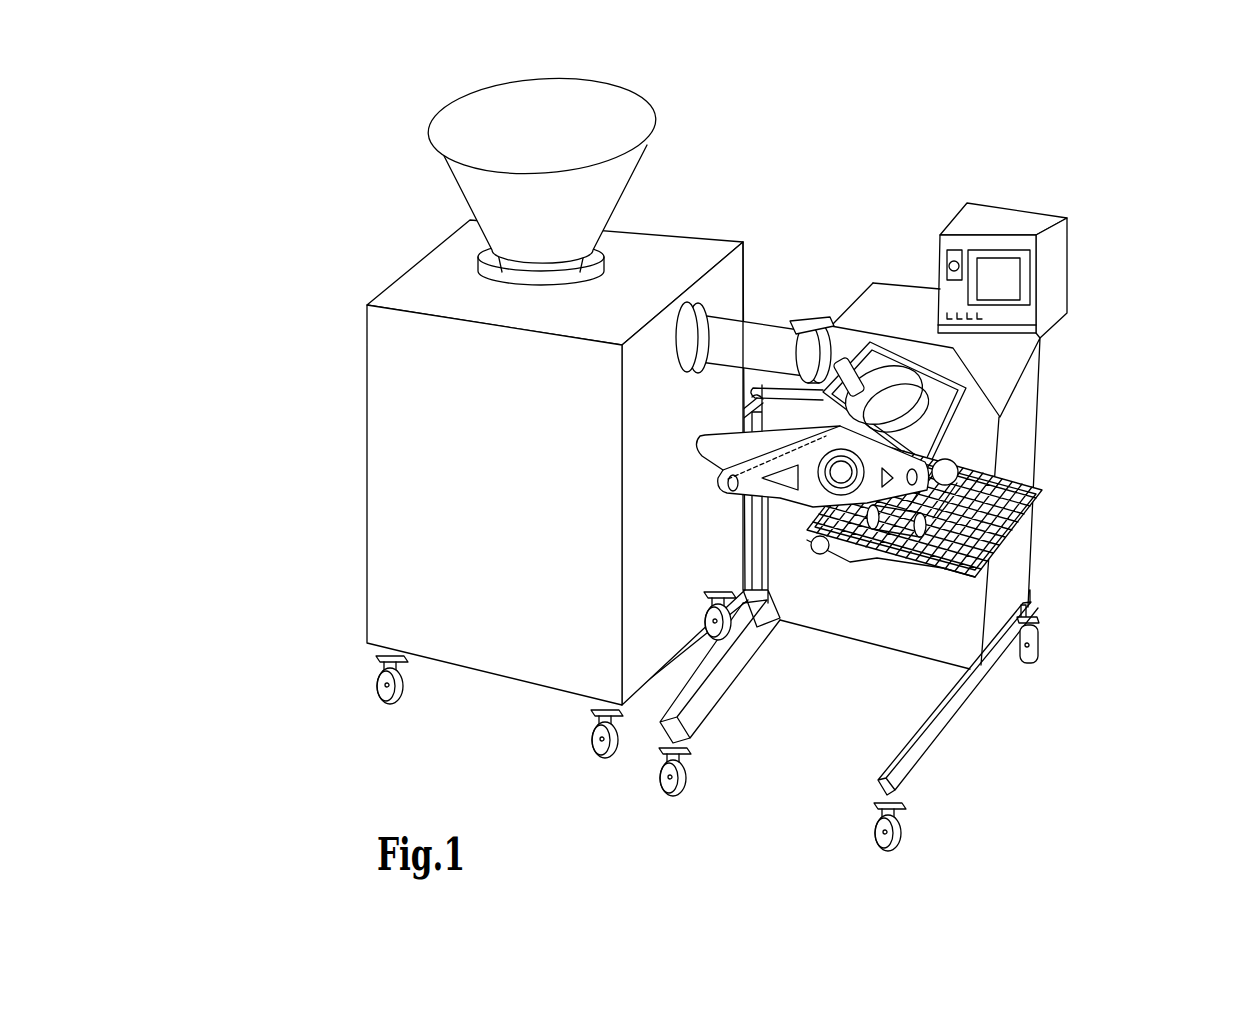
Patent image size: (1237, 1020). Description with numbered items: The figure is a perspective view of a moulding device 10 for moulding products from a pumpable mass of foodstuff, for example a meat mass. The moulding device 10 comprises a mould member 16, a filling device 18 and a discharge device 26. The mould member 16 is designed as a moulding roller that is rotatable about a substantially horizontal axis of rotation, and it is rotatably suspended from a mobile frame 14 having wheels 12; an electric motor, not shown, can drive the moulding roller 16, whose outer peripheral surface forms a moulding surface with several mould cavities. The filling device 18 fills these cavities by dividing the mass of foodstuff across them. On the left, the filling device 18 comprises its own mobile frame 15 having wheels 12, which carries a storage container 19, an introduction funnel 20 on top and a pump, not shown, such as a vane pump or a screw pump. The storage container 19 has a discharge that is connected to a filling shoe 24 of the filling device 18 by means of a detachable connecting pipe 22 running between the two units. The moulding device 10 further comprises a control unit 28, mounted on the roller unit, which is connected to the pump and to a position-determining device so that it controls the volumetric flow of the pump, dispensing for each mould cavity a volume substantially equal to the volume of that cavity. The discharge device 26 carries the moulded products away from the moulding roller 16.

The moulding device 10 is at (1085, 375).
The wheels 12 is at (383, 694).
The mobile frame 14 is at (957, 705).
The mobile frame 15 is at (485, 388).
The mould member 16 is at (857, 490).
The filling device 18 is at (751, 223).
The storage container 19 is at (383, 388).
The introduction funnel 20 is at (612, 181).
The detachable connecting pipe 22 is at (762, 338).
The filling shoe 24 is at (887, 378).
The discharge device 26 is at (1037, 508).
The control unit 28 is at (1053, 265).